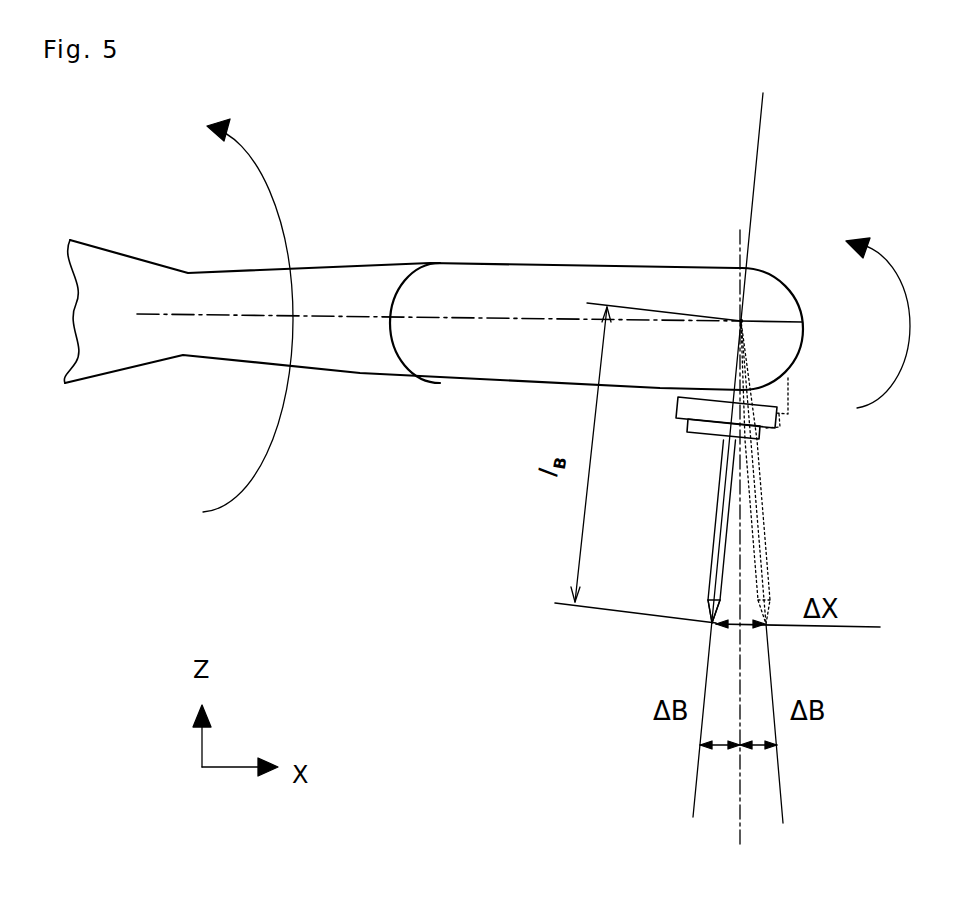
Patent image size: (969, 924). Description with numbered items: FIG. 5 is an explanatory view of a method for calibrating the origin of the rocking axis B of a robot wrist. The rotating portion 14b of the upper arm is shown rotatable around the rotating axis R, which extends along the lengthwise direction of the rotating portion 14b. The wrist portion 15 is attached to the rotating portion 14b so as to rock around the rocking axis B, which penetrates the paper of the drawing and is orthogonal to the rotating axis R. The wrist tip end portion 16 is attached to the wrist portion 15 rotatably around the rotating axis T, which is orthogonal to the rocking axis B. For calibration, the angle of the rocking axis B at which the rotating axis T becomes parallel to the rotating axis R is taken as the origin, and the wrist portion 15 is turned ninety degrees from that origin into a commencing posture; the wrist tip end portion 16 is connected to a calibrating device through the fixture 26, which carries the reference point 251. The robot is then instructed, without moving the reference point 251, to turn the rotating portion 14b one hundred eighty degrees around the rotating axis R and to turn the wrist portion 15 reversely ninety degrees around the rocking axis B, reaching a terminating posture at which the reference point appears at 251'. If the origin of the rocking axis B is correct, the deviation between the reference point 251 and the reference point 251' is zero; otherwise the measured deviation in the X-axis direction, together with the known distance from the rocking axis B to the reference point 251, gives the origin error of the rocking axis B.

The rotating portion of the upper arm 14b is at (478, 280).
The wrist portion 15 is at (700, 397).
The wrist tip end portion 16 is at (708, 414).
The fixture 26 is at (718, 527).
The reference point 251 is at (651, 633).
The reference point at the terminating posture 251' is at (807, 474).
The rotating axis R is at (202, 312).
The rocking axis B is at (741, 321).
The rotating axis T is at (753, 230).